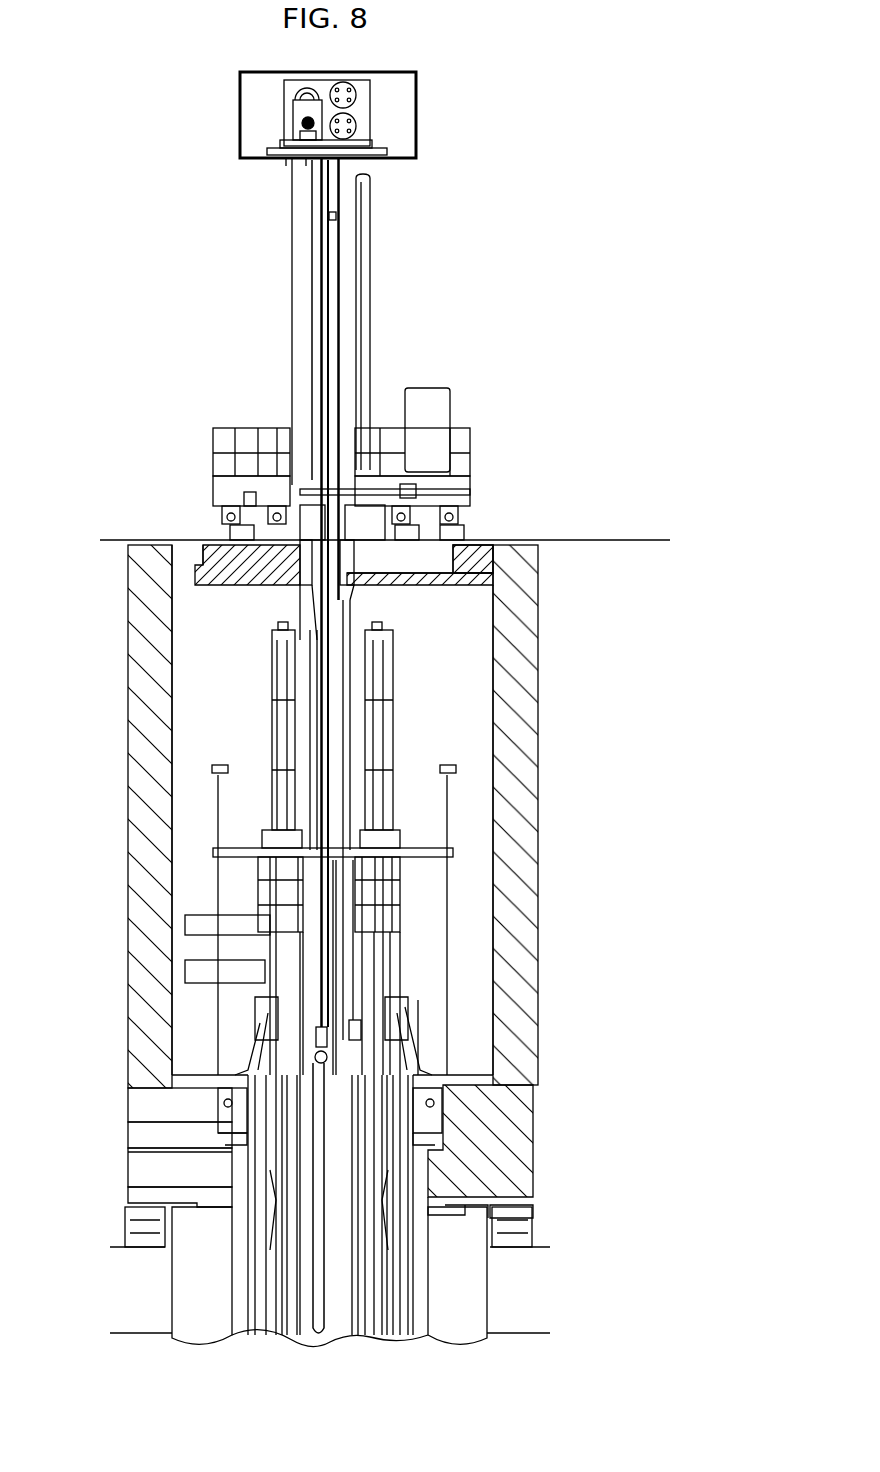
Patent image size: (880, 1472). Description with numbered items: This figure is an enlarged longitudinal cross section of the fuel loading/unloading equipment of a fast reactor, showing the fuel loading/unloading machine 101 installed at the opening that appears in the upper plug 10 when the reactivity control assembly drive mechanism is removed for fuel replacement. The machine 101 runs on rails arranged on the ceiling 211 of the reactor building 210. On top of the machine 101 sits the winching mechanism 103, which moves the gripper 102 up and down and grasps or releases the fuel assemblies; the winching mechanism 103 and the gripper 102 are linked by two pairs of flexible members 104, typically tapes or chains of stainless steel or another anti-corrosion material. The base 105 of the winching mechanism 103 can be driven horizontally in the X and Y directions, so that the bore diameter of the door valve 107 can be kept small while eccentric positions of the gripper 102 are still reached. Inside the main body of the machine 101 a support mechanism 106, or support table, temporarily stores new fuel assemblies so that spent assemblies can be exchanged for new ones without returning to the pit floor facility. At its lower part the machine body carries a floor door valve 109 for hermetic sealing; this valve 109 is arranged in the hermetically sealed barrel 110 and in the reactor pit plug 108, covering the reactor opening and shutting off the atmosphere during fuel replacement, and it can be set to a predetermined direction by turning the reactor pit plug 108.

The winching mechanism 103 is at (352, 93).
The base 105 is at (388, 158).
The support mechanism 106 is at (334, 218).
The fuel loading/unloading machine 101 is at (352, 306).
The door valve 107 is at (382, 493).
The reactor building 210 is at (608, 492).
The ceiling 211 is at (598, 540).
The reactor pit plug 108 is at (215, 571).
The floor door valve 109 is at (297, 583).
The hermetically sealed barrel 110 is at (313, 613).
The flexible members 104 is at (333, 613).
The upper plug 10 is at (400, 870).
The gripper 102 is at (395, 988).